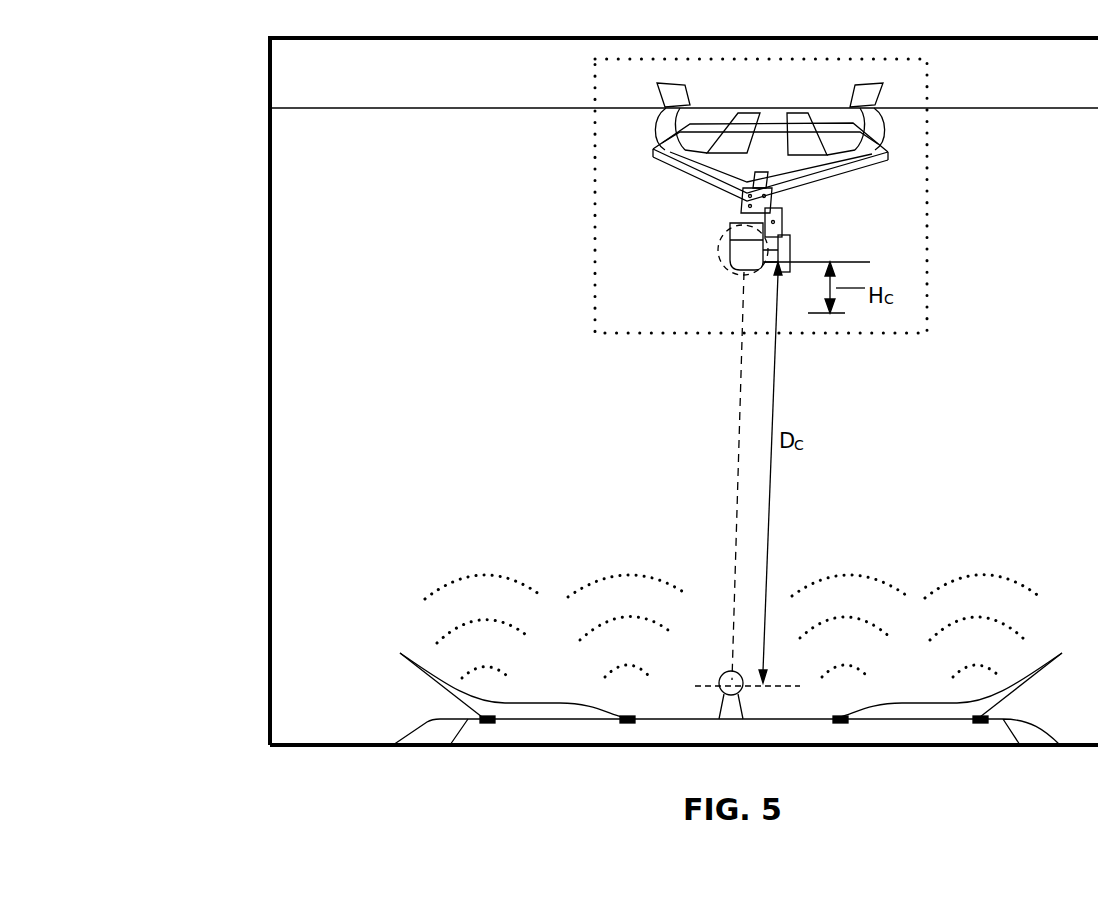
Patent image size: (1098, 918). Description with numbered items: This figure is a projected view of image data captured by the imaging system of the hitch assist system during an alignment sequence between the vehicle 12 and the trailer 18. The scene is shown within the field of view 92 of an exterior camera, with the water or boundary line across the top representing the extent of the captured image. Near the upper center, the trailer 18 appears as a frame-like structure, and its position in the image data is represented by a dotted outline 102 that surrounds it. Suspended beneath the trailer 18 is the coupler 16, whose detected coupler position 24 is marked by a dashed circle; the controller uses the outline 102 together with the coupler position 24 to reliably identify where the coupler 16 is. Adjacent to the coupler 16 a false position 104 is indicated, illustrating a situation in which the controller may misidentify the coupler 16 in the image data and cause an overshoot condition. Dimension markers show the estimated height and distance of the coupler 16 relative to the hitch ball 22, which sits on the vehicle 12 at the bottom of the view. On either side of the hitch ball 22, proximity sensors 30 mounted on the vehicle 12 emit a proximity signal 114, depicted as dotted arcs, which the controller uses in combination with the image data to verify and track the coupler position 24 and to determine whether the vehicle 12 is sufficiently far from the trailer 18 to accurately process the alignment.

The field of view 92 is at (268, 67).
The outline 102 is at (927, 204).
The trailer 18 is at (652, 149).
The false position 104 is at (807, 213).
The coupler 16 is at (744, 262).
The coupler position 24 is at (720, 247).
The hitch ball 22 is at (718, 676).
The vehicle 12 is at (424, 726).
The proximity sensor 30 is at (732, 674).
The proximity signal 114 is at (455, 556).